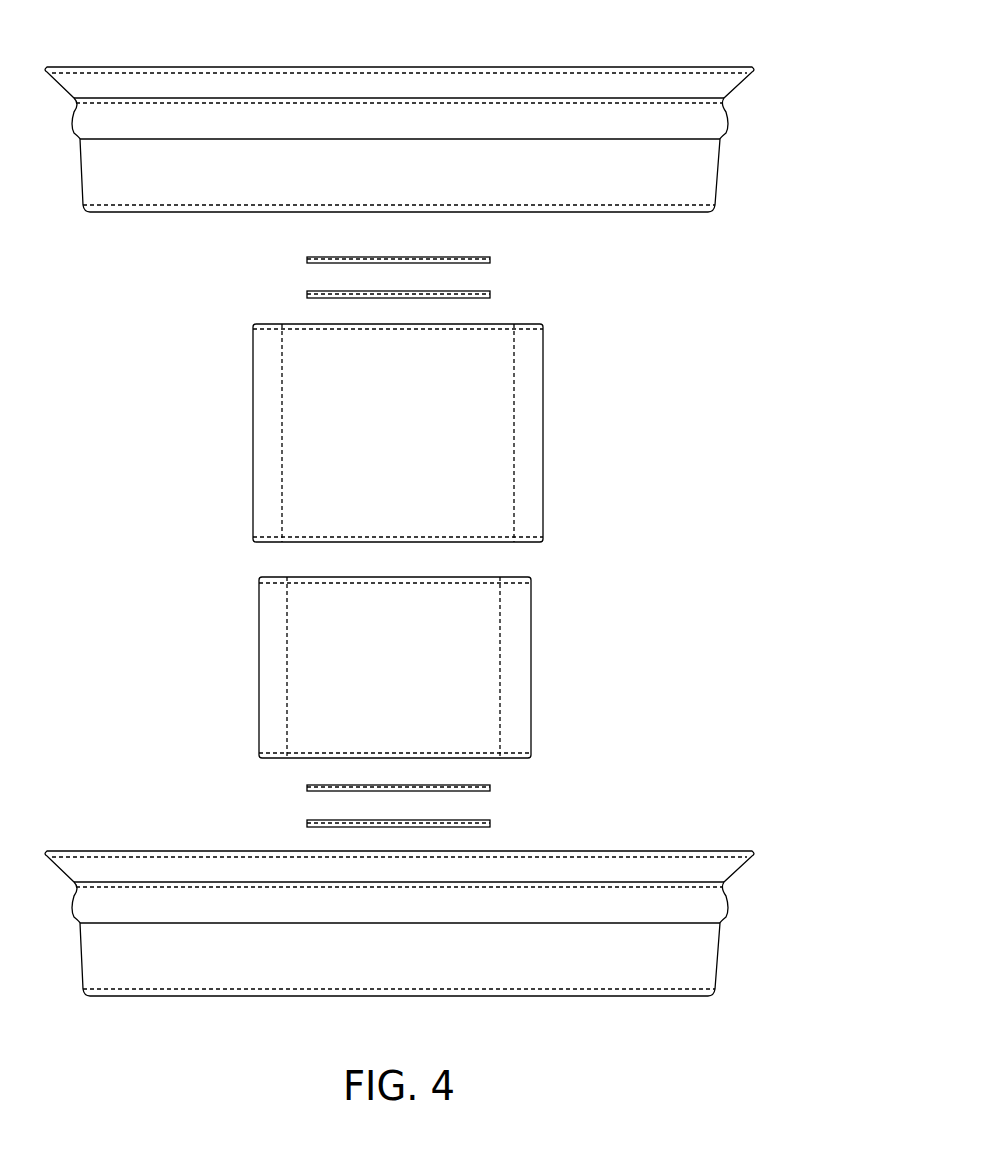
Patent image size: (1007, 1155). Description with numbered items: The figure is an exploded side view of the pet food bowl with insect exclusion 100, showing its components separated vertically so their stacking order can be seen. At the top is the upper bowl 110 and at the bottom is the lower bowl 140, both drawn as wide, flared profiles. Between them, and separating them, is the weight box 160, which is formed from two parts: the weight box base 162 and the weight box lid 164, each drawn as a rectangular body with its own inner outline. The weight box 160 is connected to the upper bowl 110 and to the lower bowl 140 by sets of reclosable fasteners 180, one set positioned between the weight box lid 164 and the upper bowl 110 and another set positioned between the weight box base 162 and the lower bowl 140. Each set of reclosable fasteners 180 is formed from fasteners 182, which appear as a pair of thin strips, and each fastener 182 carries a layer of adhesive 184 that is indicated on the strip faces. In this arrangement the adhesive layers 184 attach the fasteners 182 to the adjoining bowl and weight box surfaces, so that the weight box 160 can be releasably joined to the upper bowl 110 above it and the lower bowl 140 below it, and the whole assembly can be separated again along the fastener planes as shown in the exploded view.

The pet food bowl with insect exclusion 100 is at (572, 43).
The upper bowl 110 is at (747, 143).
The lower bowl 140 is at (747, 927).
The weight box 160 is at (240, 325).
The weight box base 162 is at (512, 662).
The weight box lid 164 is at (523, 413).
The reclosable fasteners 180 is at (300, 254).
The fasteners 182 is at (490, 260).
The layer of adhesive 184 is at (443, 252).